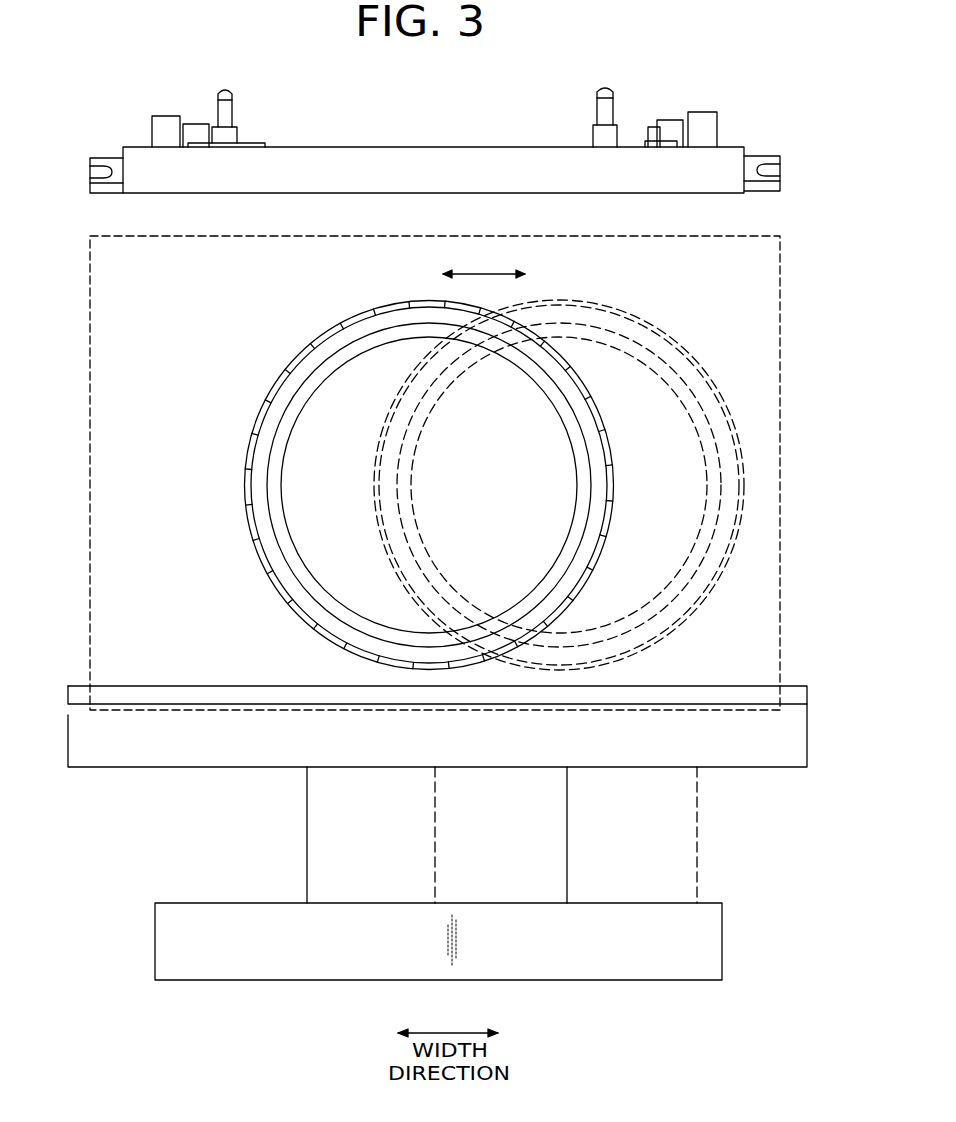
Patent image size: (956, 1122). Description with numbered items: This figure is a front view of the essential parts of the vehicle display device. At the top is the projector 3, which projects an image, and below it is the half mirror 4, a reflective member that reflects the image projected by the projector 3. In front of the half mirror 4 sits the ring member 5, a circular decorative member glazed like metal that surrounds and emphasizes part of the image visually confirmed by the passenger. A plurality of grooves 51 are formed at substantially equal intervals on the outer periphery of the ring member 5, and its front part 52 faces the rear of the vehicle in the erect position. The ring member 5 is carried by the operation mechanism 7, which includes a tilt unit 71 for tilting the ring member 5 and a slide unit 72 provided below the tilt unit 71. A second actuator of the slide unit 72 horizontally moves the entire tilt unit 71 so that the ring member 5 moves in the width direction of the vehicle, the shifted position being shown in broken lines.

The projector 3 is at (305, 160).
The half mirror 4 is at (781, 334).
The ring member 5 is at (507, 485).
The grooves 51 is at (276, 388).
The front part 52 is at (279, 514).
The operation mechanism 7 is at (475, 900).
The tilt unit 71 is at (323, 808).
The slide unit 72 is at (262, 966).